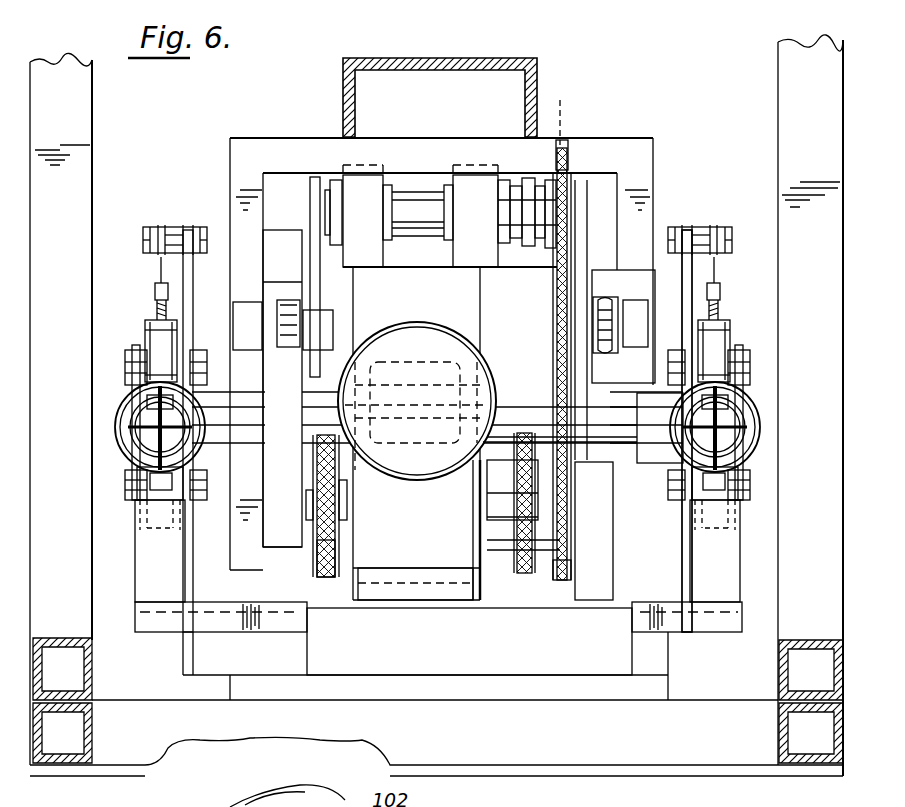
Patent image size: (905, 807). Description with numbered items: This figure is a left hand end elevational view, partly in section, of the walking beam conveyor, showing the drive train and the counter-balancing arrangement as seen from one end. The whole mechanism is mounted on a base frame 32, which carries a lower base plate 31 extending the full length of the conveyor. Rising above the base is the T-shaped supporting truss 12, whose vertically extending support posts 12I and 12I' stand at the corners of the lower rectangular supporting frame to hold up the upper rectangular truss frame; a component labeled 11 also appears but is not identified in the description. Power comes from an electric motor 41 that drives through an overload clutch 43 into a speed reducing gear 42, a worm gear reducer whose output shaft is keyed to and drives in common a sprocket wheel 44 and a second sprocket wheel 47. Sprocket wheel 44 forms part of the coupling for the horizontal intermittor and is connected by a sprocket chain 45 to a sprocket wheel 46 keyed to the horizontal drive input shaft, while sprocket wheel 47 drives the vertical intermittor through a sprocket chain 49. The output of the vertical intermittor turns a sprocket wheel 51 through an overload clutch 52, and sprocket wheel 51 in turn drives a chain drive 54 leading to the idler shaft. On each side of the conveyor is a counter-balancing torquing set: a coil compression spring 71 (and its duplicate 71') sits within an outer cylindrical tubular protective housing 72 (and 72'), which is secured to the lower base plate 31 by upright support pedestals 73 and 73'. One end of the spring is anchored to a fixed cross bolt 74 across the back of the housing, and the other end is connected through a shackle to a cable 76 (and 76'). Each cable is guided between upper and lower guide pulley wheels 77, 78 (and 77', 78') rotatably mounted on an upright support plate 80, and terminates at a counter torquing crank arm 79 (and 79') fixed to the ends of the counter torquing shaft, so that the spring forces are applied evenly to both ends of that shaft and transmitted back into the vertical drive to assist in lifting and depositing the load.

The top beam 11 is at (402, 56).
The T-shaped supporting truss 12 is at (416, 328).
The vertically extending support post 12I is at (646, 243).
The vertically extending support post 12I' is at (230, 336).
The lower base plate 31 is at (300, 622).
The base frame 32 is at (580, 745).
The electric motor 41 is at (412, 334).
The speed reducing gear 42 is at (450, 300).
The overload clutch 43 is at (438, 365).
The sprocket wheel 44 is at (560, 553).
The sprocket chain 45 is at (557, 318).
The sprocket wheel 46 is at (559, 127).
The second sprocket wheel 47 is at (320, 580).
The sprocket chain 49 is at (318, 482).
The sprocket wheel 51 is at (520, 580).
The overload clutch 52 is at (493, 490).
The chain drive 54 is at (528, 433).
The coil compression spring 71 is at (747, 428).
The coil compression spring 71' is at (122, 428).
The tubular protective housing 72 is at (689, 431).
The cylindrical housing 72' is at (156, 431).
The upright support pedestal 73 is at (732, 551).
The upright support pedestal 73' is at (144, 551).
The fixed cross bolt 74 is at (150, 400).
The cable 76 is at (733, 288).
The cable 76' is at (134, 288).
The upper guide pulley wheel 77 is at (732, 336).
The upper guide pulley wheel 77' is at (138, 347).
The lower guide pulley wheel 78 is at (730, 502).
The lower guide pulley wheel 78' is at (140, 498).
The counter torquing crank arm 79 is at (698, 214).
The counter torquing crank arm 79' is at (175, 217).
The upright support plate 80 is at (692, 650).